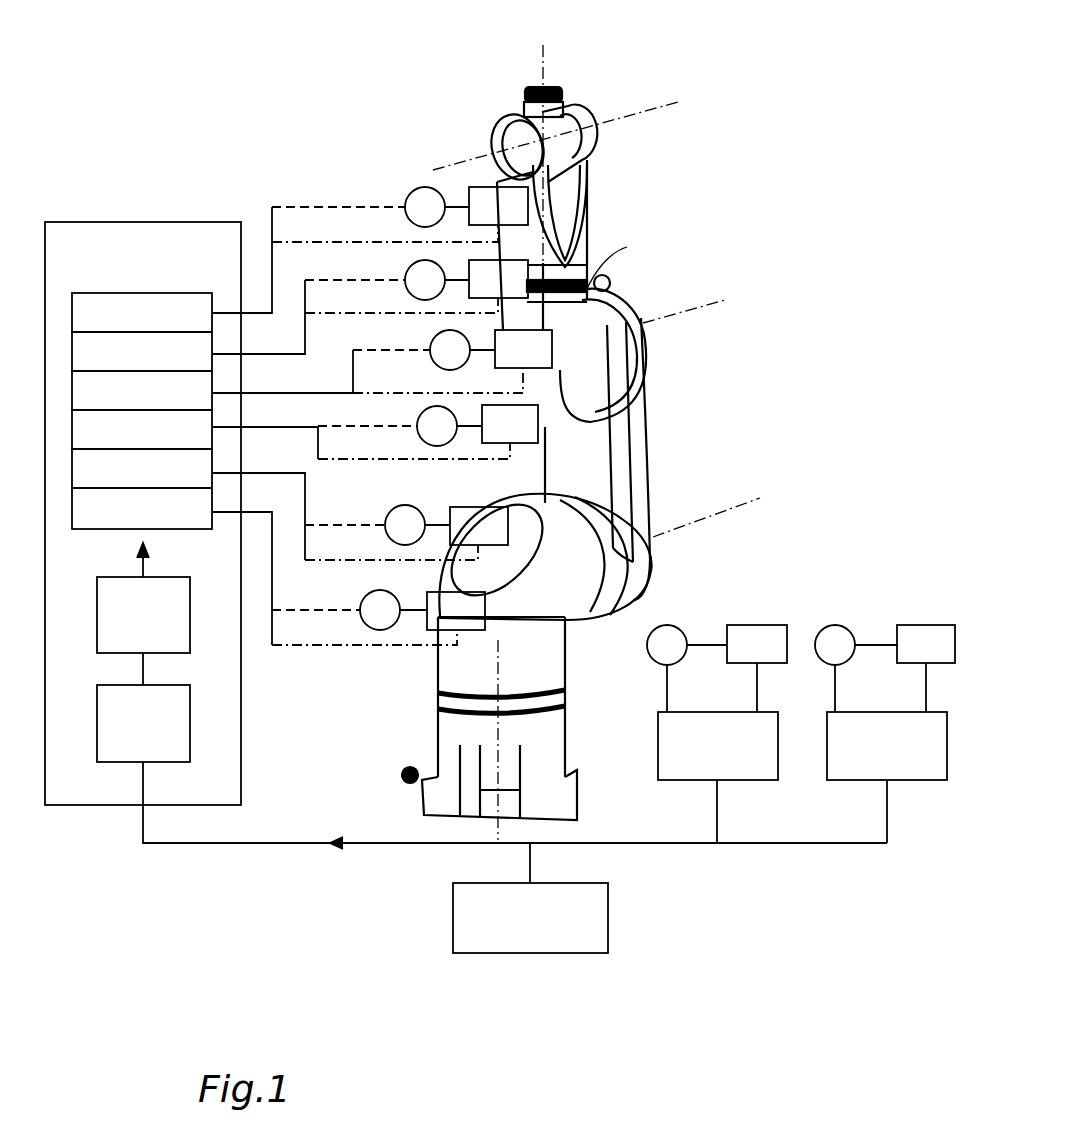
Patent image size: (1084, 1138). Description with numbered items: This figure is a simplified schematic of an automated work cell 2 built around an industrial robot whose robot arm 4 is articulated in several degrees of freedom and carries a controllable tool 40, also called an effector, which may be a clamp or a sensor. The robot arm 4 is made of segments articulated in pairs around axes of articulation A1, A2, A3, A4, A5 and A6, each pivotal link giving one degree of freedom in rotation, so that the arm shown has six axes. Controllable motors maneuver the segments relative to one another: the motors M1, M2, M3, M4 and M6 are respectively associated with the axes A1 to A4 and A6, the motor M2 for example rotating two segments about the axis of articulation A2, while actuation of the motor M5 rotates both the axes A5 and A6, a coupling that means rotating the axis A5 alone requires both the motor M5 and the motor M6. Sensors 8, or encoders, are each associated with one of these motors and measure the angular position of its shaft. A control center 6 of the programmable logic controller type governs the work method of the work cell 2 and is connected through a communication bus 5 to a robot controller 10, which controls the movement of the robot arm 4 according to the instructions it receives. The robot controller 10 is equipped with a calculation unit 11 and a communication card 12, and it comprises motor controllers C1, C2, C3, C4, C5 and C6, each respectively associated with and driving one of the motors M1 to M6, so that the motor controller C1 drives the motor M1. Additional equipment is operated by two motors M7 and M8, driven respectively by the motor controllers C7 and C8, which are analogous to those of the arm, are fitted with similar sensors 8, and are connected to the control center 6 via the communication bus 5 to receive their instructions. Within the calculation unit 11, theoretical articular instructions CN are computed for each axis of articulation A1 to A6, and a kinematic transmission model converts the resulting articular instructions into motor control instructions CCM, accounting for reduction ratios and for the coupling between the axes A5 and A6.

The automated work cell 2 is at (382, 85).
The robot arm 4 is at (695, 455).
The communication bus 5 is at (275, 845).
The control center 6 is at (608, 937).
The sensors 8 is at (433, 338).
The robot controller 10 is at (95, 808).
The calculation unit 11 is at (97, 626).
The communication card 12 is at (97, 738).
The controllable tool 40 is at (560, 85).
The axis of articulation A1 is at (503, 660).
The axis of articulation A2 is at (724, 508).
The axis of articulation A3 is at (699, 303).
The axis of articulation A4 is at (622, 257).
The axis of articulation A5 is at (570, 127).
The axis of articulation A6 is at (543, 174).
The motor M1 is at (456, 611).
The motor M2 is at (479, 526).
The motor M3 is at (510, 424).
The motor M4 is at (523, 349).
The motor M5 is at (498, 279).
The motor M6 is at (498, 206).
The motor M7 is at (757, 644).
The motor M8 is at (926, 644).
The motor controller C1 is at (142, 508).
The motor controller C2 is at (142, 468).
The motor controller C3 is at (142, 429).
The motor controller C4 is at (142, 390).
The motor controller C5 is at (142, 351).
The motor controller C6 is at (142, 312).
The motor controller C7 is at (718, 746).
The motor controller C8 is at (887, 746).
The motor control instructions CCM is at (169, 560).
The theoretical articular instructions CN is at (328, 825).